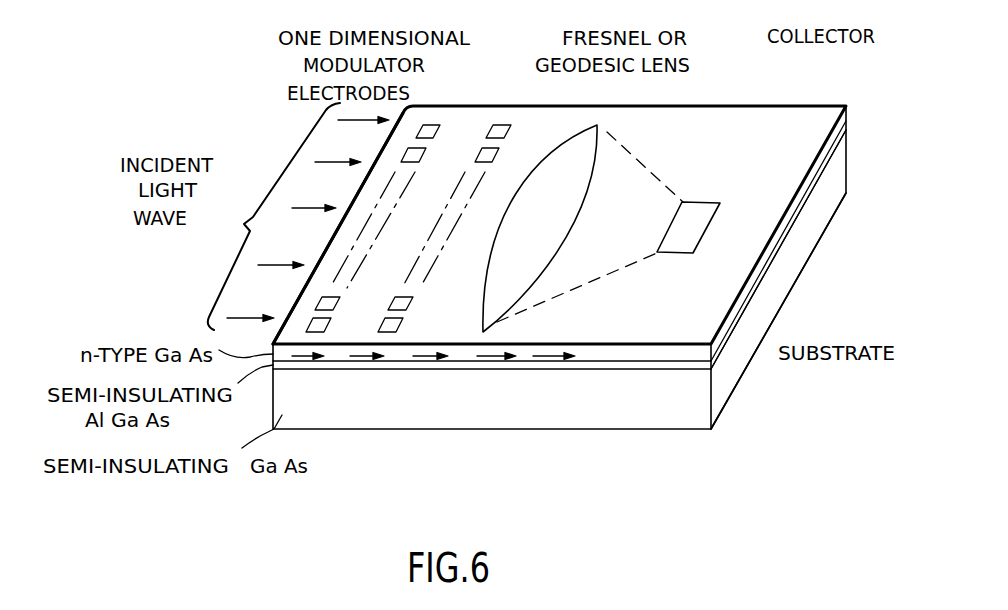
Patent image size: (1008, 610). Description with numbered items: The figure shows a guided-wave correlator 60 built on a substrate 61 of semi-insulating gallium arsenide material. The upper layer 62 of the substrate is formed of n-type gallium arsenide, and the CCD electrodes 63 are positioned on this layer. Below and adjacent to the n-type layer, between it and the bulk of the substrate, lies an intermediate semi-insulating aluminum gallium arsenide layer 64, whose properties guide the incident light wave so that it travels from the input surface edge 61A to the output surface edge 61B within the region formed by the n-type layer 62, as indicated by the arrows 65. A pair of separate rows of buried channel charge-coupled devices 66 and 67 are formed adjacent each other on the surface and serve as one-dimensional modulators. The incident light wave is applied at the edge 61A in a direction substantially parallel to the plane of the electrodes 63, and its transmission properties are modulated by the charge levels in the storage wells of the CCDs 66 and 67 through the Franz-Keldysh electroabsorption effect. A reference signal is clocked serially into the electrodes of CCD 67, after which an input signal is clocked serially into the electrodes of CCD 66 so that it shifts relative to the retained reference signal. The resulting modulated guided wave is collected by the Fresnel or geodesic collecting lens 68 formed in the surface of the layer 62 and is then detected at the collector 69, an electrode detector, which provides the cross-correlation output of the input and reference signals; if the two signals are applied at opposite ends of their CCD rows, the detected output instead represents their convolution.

The correlator 60 is at (544, 249).
The substrate 61 is at (747, 343).
The input surface edge 61A is at (298, 299).
The output surface edge 61B is at (778, 279).
The upper layer 62 is at (780, 237).
The CCD electrodes 63 is at (429, 207).
The intermediate semi-insulating aluminum gallium arsenide layer 64 is at (758, 285).
The arrows 65 is at (420, 358).
The buried channel charge-coupled device 66 is at (442, 151).
The buried channel charge-coupled device 67 is at (516, 149).
The collecting lens 68 is at (566, 150).
The collector 69 is at (704, 202).